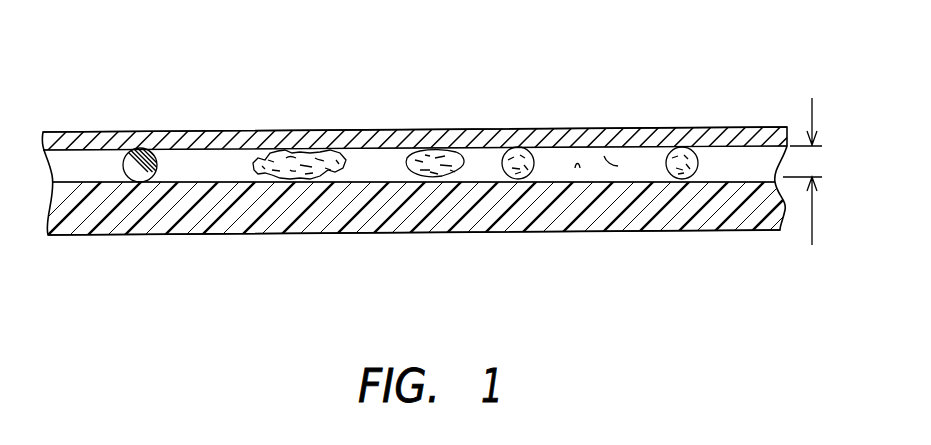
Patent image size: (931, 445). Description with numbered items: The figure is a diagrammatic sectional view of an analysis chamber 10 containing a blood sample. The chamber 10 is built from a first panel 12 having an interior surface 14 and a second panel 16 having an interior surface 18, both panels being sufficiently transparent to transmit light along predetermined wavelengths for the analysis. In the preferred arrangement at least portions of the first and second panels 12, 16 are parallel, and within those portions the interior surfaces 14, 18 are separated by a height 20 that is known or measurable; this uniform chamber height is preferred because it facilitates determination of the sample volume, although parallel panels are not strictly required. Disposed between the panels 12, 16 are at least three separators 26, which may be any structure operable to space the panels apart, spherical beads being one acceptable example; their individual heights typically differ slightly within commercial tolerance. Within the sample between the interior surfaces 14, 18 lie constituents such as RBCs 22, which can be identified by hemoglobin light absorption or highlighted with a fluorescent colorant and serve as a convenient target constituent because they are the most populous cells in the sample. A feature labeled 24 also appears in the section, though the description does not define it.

The analysis chamber 10 is at (369, 160).
The first panel 12 is at (421, 130).
The interior surface 14 is at (593, 159).
The second panel 16 is at (199, 235).
The interior surface 18 is at (578, 166).
The height 20 is at (811, 116).
The RBC 22 is at (280, 152).
The void 24 is at (604, 156).
The separator 26 is at (133, 152).